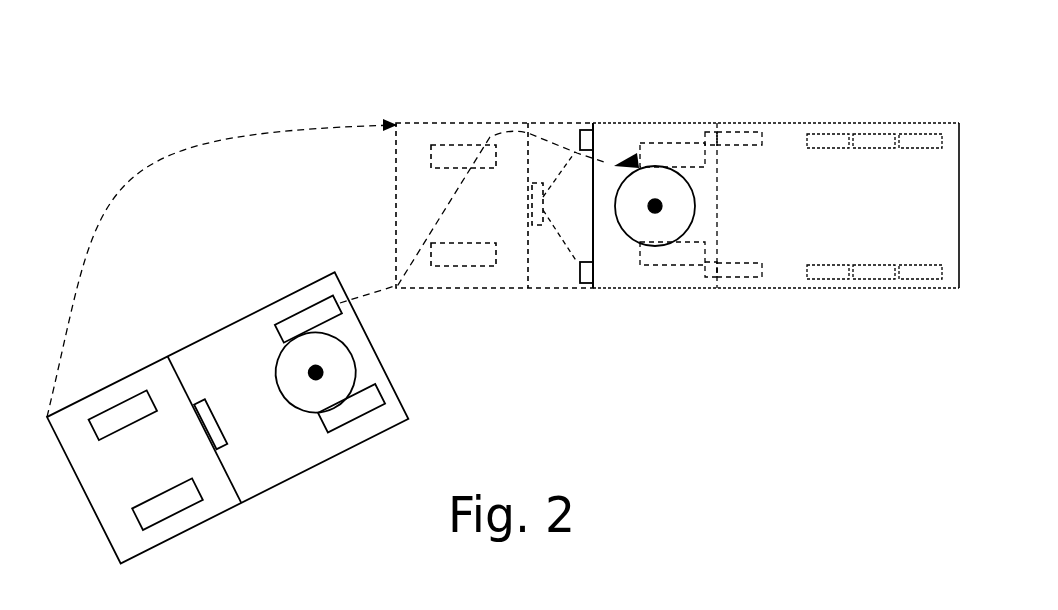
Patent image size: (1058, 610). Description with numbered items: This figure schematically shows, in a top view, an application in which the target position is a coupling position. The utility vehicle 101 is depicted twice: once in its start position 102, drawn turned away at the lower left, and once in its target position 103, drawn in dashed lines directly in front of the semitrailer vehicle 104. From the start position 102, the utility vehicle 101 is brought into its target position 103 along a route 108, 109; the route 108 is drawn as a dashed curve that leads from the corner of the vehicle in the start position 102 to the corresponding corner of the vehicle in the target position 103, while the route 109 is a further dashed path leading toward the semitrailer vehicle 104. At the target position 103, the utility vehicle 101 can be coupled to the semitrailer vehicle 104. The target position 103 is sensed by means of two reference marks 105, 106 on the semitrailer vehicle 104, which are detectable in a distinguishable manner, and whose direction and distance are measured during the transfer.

The utility vehicle 101 is at (520, 220).
The start position 102 is at (227, 403).
The target position 103 is at (485, 206).
The semitrailer vehicle 104 is at (856, 219).
The reference mark 105 is at (578, 138).
The reference mark 106 is at (578, 273).
The route 108 is at (192, 150).
The route 109 is at (377, 290).